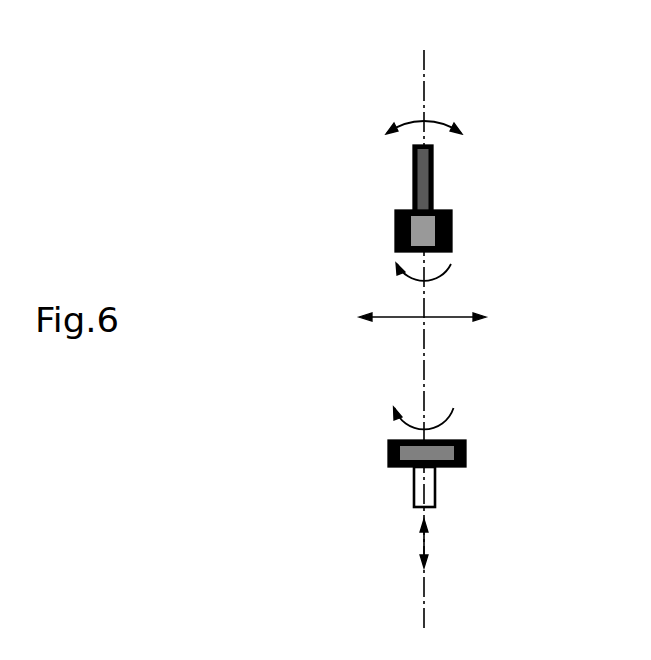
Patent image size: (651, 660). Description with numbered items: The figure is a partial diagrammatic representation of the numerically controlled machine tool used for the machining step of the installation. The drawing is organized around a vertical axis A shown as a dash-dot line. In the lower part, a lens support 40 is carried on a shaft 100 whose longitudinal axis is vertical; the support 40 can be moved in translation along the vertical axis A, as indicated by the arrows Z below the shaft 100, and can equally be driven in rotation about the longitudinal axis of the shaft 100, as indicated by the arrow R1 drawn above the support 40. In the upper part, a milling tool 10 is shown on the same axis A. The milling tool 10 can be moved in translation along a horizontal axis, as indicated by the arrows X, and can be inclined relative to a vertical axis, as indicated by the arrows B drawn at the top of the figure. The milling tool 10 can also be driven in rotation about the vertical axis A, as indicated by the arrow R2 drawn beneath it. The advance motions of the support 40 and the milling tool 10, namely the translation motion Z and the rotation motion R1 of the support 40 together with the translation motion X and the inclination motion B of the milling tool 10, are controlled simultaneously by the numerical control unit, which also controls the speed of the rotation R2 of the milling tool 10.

The vertical axis A is at (424, 63).
The inclination motion B is at (436, 131).
The milling tool 10 is at (452, 225).
The rotation of the milling tool R2 is at (446, 272).
The translation motion X is at (437, 318).
The rotation of the support R1 is at (446, 416).
The lens support 40 is at (466, 452).
The shaft 100 is at (435, 488).
The translation motion Z is at (441, 548).